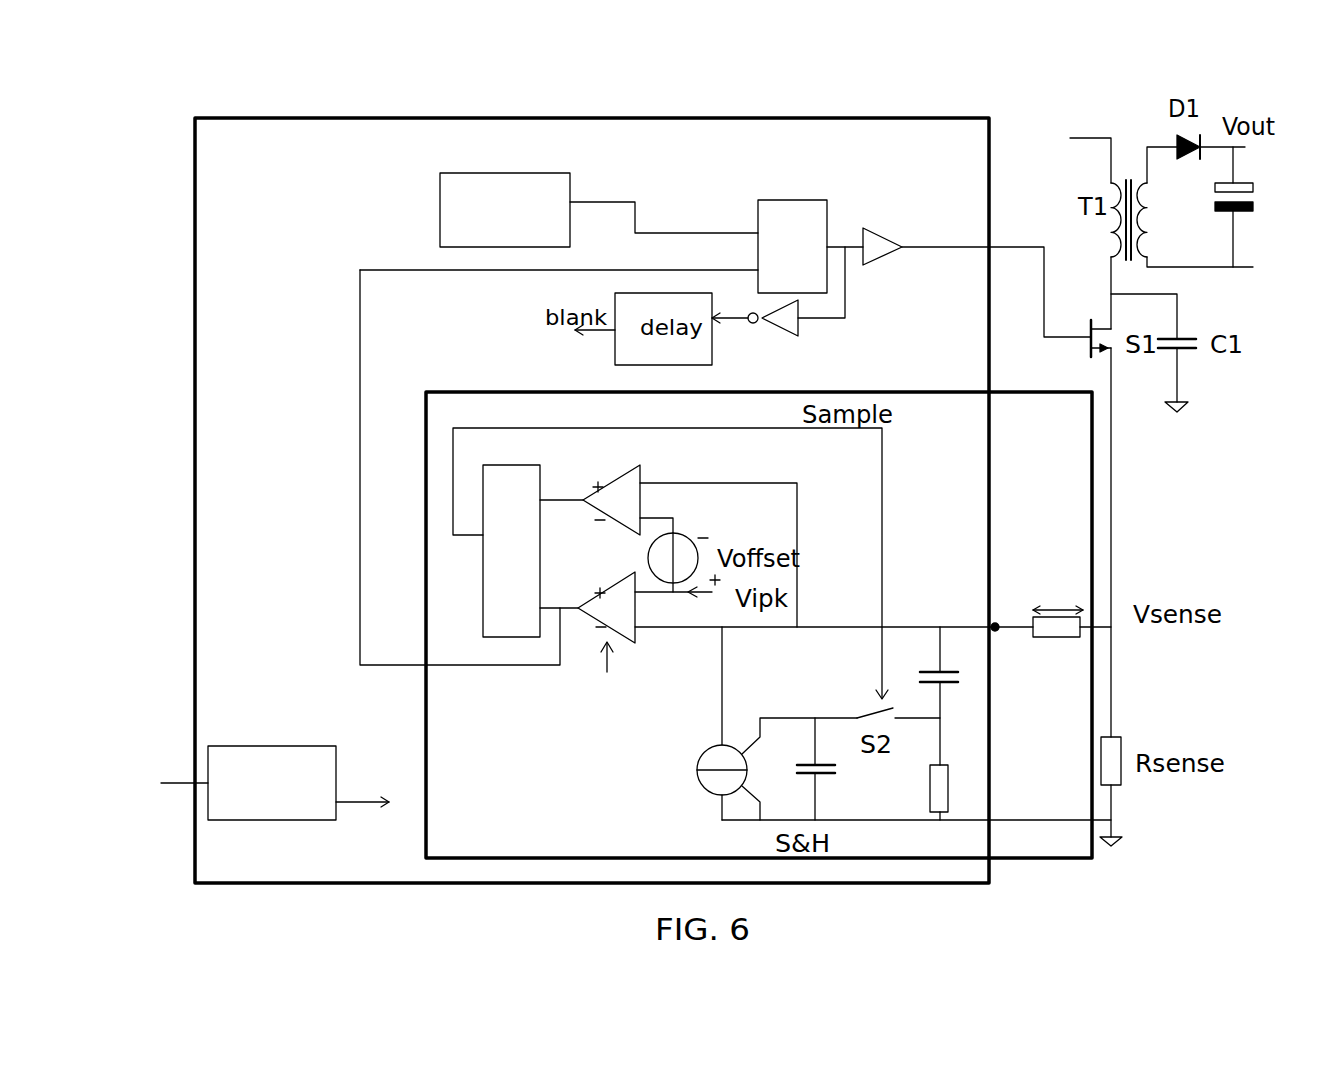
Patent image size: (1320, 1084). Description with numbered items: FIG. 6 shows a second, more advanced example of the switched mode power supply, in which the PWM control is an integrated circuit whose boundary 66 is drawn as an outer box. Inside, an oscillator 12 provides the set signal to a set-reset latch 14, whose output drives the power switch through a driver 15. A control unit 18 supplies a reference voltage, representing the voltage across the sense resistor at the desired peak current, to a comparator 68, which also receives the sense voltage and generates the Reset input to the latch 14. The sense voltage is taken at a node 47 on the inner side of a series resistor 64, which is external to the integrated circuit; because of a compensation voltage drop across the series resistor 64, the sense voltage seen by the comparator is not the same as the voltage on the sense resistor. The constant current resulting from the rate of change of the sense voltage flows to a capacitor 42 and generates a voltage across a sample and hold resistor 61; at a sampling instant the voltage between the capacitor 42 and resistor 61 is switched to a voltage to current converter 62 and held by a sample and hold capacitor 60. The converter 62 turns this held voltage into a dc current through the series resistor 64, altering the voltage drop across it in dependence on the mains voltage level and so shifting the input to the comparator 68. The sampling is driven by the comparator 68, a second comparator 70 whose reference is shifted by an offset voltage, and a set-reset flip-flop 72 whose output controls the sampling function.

The oscillator 12 is at (440, 202).
The set-reset latch 14 is at (758, 225).
The driver 15 is at (882, 230).
The control unit 18 is at (302, 746).
The capacitor 42 is at (914, 671).
The sense voltage node 47 is at (997, 632).
The sample and hold capacitor 60 is at (843, 779).
The sample and hold resistor 61 is at (948, 790).
The voltage to current converter 62 is at (746, 724).
The series resistor 64 is at (1080, 637).
The boundary 66 is at (195, 483).
The comparator 68 is at (612, 583).
The second comparator 70 is at (630, 480).
The set-reset flip-flop 72 is at (495, 642).